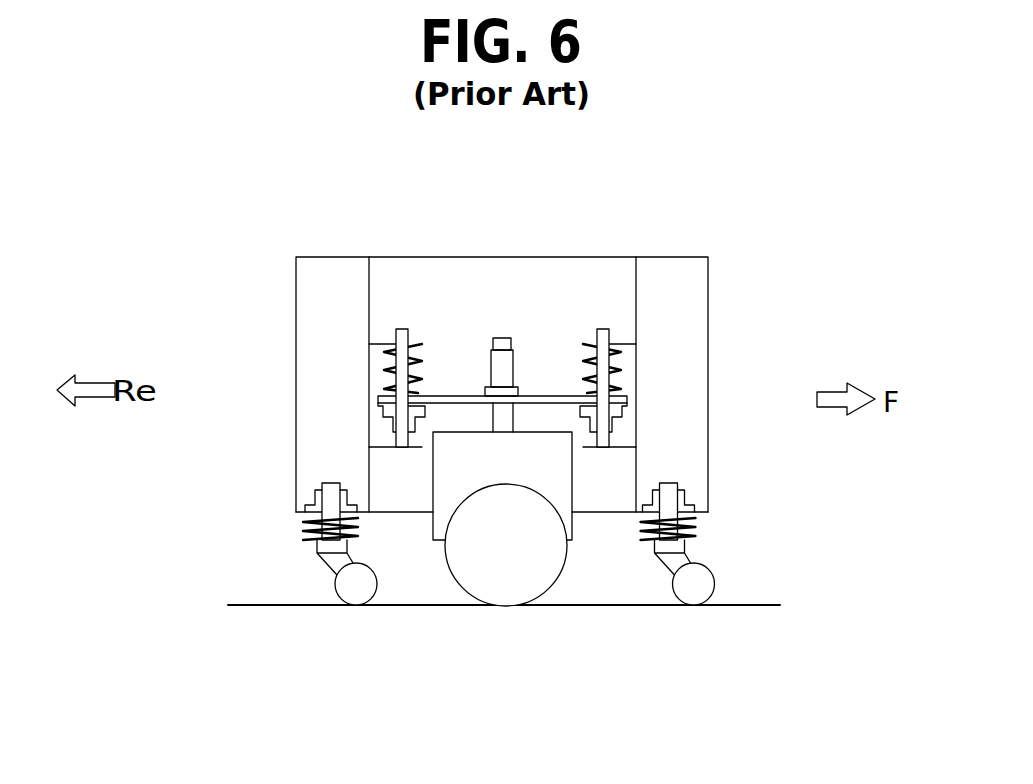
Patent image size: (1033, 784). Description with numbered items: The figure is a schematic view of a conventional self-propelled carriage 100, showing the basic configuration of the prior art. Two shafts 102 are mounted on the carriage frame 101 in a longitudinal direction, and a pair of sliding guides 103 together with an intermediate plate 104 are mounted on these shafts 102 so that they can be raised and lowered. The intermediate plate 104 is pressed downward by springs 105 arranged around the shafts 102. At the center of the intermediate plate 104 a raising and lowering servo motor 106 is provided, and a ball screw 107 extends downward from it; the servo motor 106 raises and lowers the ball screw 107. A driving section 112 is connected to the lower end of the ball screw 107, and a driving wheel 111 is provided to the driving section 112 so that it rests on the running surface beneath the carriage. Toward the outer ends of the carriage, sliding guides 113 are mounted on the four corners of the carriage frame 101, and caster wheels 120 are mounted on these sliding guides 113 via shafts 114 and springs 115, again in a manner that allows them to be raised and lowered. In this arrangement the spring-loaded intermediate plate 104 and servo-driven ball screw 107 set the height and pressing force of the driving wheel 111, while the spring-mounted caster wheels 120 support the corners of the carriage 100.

The self-propelled carriage 100 is at (492, 314).
The carriage frame 101 is at (294, 331).
The shaft 102 is at (401, 329).
The sliding guide 103 is at (388, 424).
The intermediate plate 104 is at (378, 400).
The spring 105 is at (385, 372).
The raising and lowering servo motor 106 is at (485, 363).
The ball screw 107 is at (513, 432).
The driving wheel 111 is at (560, 579).
The driving section 112 is at (580, 493).
The sliding guide 113 is at (313, 500).
The shaft 114 is at (331, 483).
The spring 115 is at (305, 535).
The caster wheel 120 is at (307, 560).